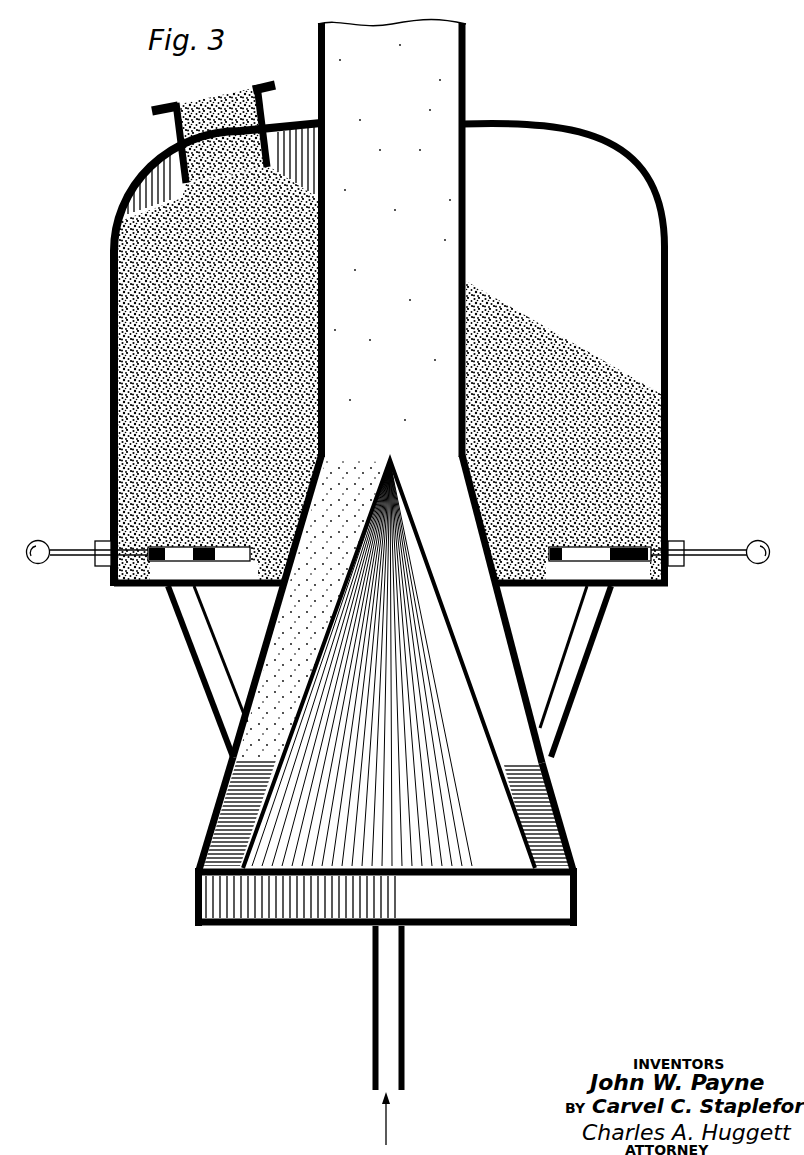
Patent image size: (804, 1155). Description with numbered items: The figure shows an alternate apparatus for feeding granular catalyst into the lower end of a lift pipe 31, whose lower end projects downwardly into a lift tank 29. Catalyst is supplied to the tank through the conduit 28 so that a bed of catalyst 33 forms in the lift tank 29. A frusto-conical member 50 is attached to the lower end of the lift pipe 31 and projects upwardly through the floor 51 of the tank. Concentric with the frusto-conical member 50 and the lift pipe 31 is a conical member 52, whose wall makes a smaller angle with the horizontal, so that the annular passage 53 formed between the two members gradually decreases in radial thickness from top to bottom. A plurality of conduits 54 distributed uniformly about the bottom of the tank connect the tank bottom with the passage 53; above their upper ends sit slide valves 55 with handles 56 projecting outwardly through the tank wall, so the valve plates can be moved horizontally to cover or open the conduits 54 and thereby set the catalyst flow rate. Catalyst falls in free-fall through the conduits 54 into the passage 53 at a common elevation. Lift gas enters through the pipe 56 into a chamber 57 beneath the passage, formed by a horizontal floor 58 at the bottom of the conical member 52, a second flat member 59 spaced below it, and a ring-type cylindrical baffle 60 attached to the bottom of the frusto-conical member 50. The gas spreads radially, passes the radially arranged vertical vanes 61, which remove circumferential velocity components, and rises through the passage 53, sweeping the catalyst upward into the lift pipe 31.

The conduit 28 is at (174, 132).
The lift tank 29 is at (110, 299).
The lift pipe 31 is at (467, 62).
The abrasive material 33 is at (235, 334).
The frusto-conical member 50 is at (223, 777).
The floor 51 is at (537, 590).
The conical member 52 is at (480, 722).
The annular passage 53 is at (500, 681).
The conduits 54 is at (210, 697).
The slide valves 55 is at (206, 548).
The handles / pipe 56 is at (718, 557).
The chamber 57 is at (503, 906).
The horizontal floor 58 is at (475, 853).
The second flat member 59 is at (525, 927).
The ring-type cylindrical baffle 60 is at (577, 897).
The vertical vanes 61 is at (227, 825).